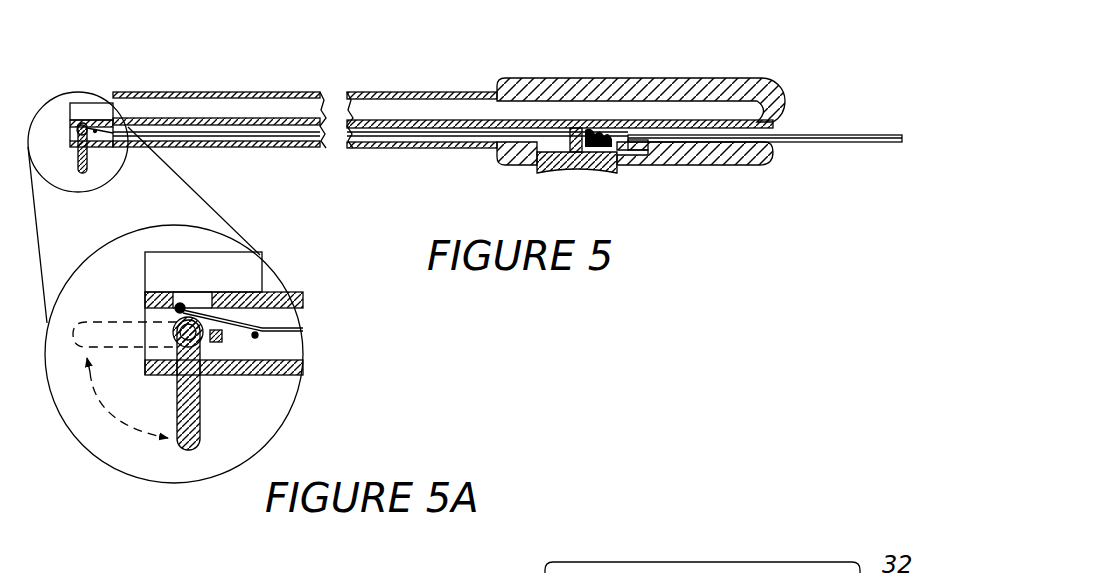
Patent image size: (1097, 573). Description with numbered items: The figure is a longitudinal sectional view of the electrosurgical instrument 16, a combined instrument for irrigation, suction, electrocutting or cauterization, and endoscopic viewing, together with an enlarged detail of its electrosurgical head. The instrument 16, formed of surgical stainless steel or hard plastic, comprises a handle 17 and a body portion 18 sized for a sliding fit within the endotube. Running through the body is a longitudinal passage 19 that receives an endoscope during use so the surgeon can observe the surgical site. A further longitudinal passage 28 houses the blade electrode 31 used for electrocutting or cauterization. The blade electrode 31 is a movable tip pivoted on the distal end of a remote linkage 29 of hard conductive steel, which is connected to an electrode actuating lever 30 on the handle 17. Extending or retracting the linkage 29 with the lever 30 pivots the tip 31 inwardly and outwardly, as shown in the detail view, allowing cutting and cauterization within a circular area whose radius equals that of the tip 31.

In FIG. 5, the electrosurgical instrument 16 is at (256, 78).
In FIG. 5, the handle 17 is at (549, 76).
In FIG. 5, the body portion 18 is at (273, 148).
In FIG. 5, the longitudinal passage 19 is at (115, 97).
In FIG. 5, the longitudinal passage 28 is at (676, 166).
In FIG. 5, the remote linkage 29 is at (117, 128).
In FIG. 5A, the remote linkage 29 is at (270, 328).
In FIG. 5, the electrode actuating lever 30 is at (561, 160).
In FIG. 5, the blade electrode 31 is at (88, 165).
In FIG. 5A, the blade electrode 31 is at (195, 416).